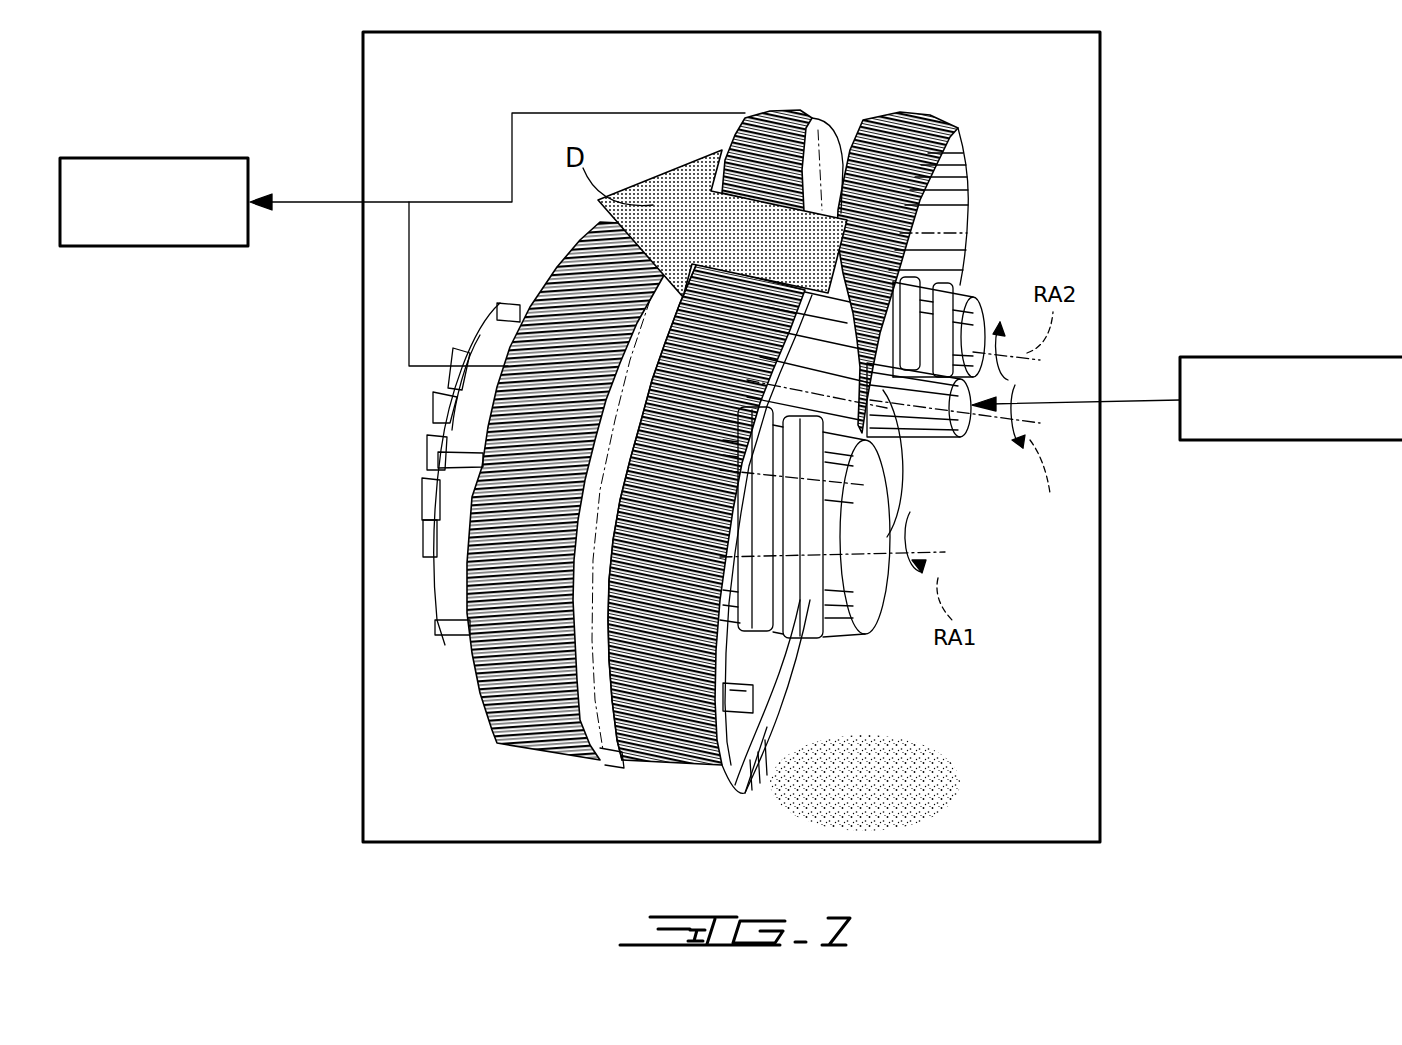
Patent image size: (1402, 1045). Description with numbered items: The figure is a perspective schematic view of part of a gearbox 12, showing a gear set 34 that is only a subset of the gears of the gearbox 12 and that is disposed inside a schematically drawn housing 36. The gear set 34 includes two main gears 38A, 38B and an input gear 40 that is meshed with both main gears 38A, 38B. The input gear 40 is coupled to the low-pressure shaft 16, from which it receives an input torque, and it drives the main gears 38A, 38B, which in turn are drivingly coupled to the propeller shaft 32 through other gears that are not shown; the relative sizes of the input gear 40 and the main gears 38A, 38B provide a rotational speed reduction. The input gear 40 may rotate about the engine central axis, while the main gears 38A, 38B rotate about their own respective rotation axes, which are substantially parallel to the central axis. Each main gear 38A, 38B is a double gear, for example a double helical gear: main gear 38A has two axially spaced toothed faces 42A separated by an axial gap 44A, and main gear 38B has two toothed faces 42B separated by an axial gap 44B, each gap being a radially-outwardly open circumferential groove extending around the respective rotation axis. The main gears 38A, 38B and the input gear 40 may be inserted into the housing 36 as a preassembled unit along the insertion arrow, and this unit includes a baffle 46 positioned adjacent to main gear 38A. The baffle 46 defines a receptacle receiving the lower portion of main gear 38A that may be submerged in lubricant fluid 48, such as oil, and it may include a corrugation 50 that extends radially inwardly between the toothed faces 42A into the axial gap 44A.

The gearbox 12 is at (362, 62).
The low-pressure shaft 16 is at (1290, 446).
The propeller shaft 32 is at (150, 247).
The gear set 34 is at (455, 148).
The housing 36 is at (355, 437).
The main gear 38A is at (462, 684).
The main gear 38B is at (972, 152).
The input gear 40 is at (883, 382).
The toothed faces 42A is at (583, 637).
The toothed faces 42B is at (830, 112).
The axial gap 44A is at (580, 713).
The axial gap 44B is at (782, 118).
The baffle 46 is at (787, 690).
The lubricant fluid 48 is at (885, 775).
The corrugation 50 is at (615, 763).